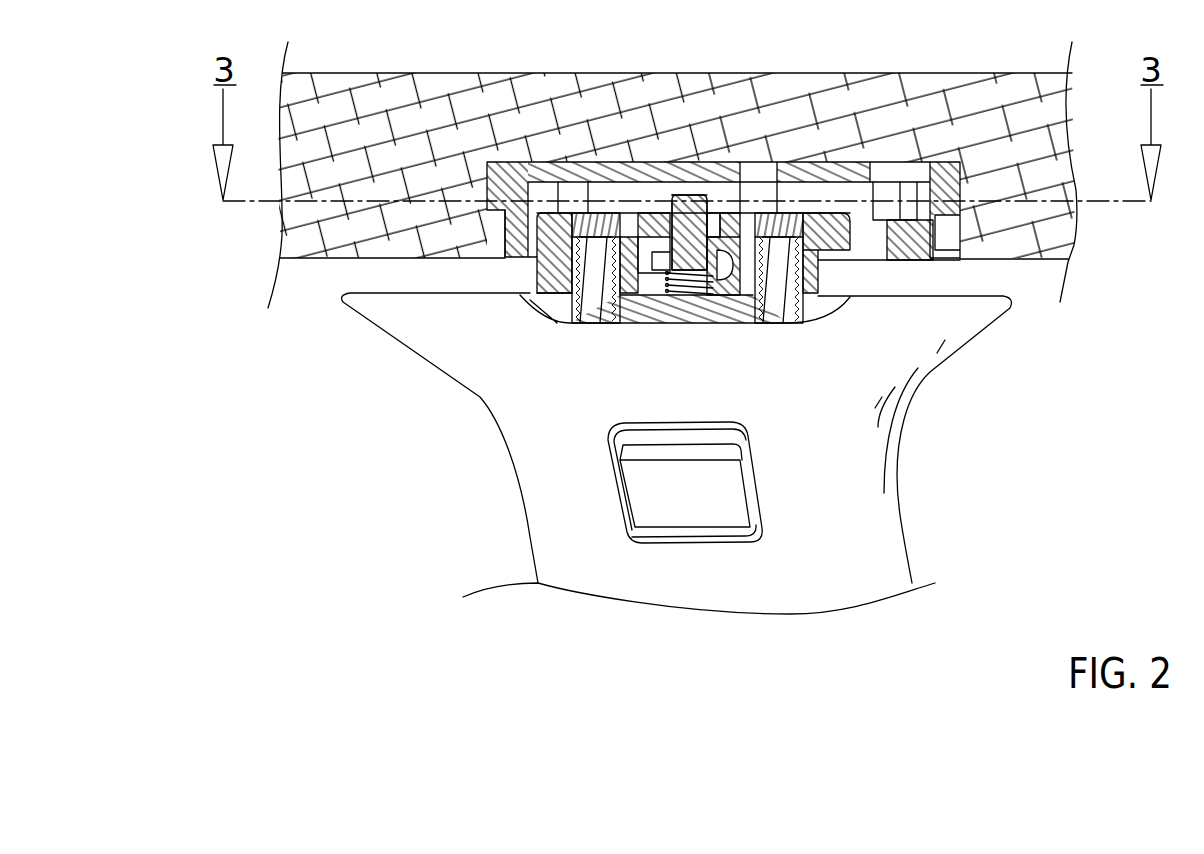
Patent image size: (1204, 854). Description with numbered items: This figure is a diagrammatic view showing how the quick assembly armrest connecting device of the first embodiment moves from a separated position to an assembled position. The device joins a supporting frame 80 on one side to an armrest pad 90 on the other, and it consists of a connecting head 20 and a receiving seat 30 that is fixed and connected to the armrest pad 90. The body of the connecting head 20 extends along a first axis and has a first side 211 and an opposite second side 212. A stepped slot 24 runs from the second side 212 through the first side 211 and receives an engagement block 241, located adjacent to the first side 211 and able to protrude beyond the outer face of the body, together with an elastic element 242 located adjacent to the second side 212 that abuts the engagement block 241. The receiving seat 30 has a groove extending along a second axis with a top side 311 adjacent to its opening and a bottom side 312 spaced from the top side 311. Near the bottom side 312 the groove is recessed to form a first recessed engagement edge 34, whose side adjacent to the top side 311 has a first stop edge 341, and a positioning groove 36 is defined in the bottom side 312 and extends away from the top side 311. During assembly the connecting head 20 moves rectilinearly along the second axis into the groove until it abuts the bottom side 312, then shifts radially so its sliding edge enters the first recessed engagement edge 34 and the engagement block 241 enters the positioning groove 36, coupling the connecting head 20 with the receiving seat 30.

The connecting head 20 is at (833, 282).
The first side 211 is at (505, 215).
The second side 212 is at (558, 298).
The slot 24 is at (724, 200).
The engagement block 241 is at (670, 196).
The elastic element 242 is at (712, 213).
The receiving seat 30 is at (952, 261).
The top side 311 is at (545, 300).
The bottom side 312 is at (620, 177).
The first recessed engagement edge 34 is at (905, 200).
The first stop edge 341 is at (910, 250).
The positioning groove 36 is at (768, 208).
The supporting frame 80 is at (543, 427).
The armrest pad 90 is at (875, 83).